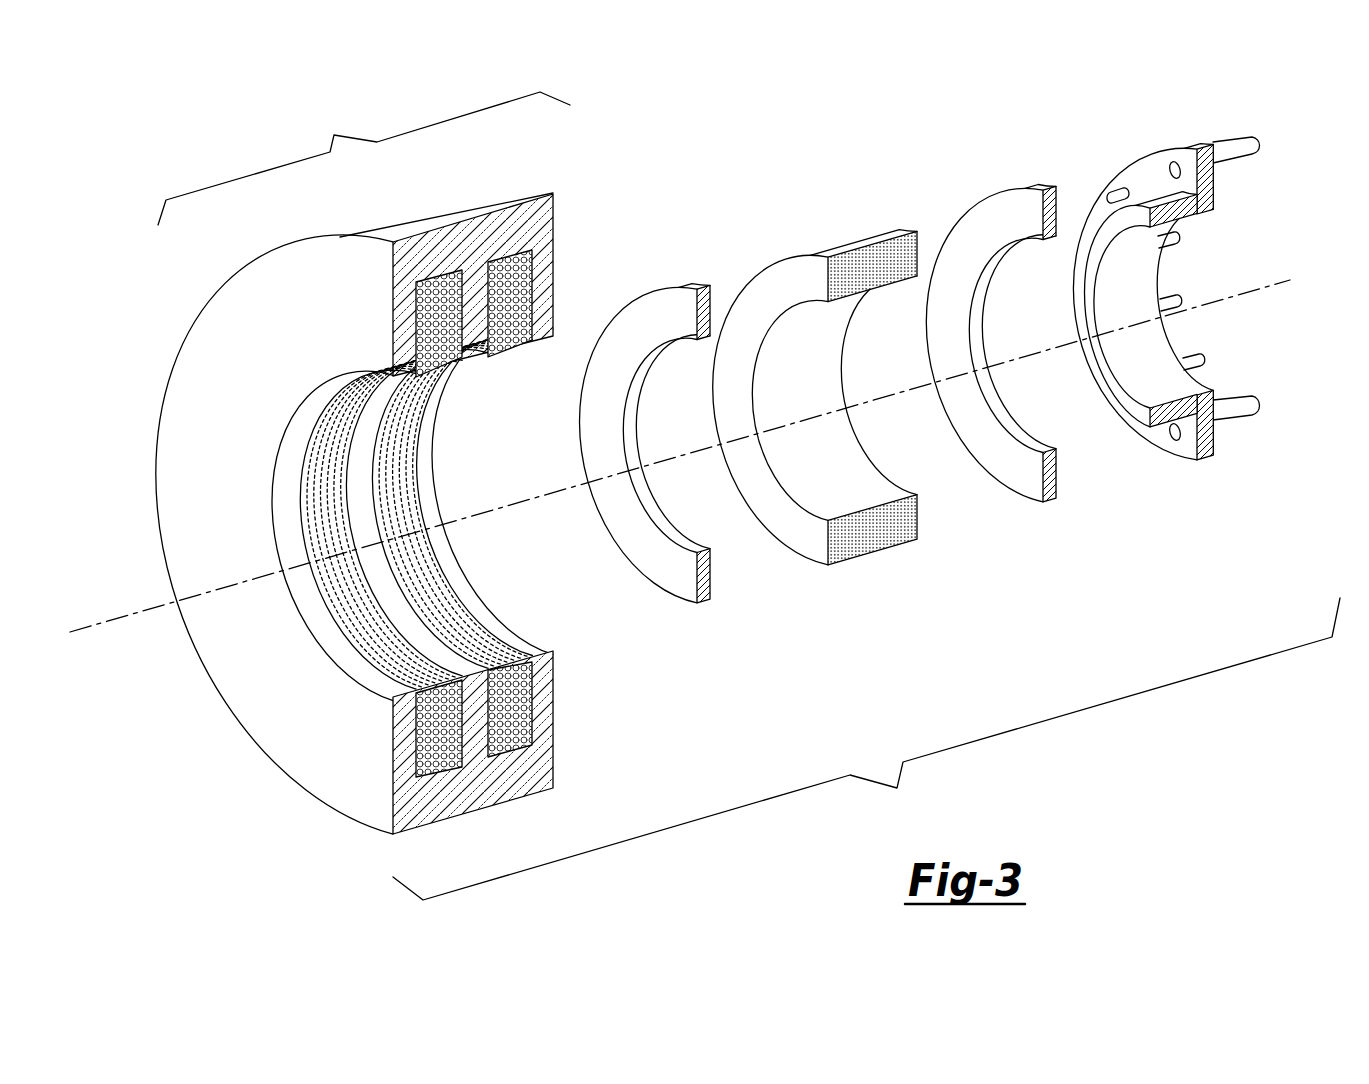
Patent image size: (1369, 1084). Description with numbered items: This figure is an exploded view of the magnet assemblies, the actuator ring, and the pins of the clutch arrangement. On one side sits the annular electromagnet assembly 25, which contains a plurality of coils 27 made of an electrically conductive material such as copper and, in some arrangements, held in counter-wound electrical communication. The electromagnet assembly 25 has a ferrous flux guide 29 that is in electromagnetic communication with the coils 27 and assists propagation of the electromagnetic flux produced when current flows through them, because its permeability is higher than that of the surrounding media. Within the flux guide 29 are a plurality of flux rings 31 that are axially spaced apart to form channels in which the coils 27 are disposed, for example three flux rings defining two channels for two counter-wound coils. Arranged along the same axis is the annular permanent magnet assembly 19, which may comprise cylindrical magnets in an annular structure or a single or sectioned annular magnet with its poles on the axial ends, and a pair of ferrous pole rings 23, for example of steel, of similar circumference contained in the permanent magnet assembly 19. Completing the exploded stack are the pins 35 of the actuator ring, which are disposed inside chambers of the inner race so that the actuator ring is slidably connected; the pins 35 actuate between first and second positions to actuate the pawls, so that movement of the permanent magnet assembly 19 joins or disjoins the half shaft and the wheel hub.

The permanent magnet assembly 19 is at (877, 541).
The pole rings 23 is at (708, 591).
The electromagnet assembly 25 is at (394, 463).
The coils 27 is at (510, 343).
The flux guide 29 is at (545, 237).
The flux rings 31 is at (428, 648).
The pins 35 is at (1203, 368).